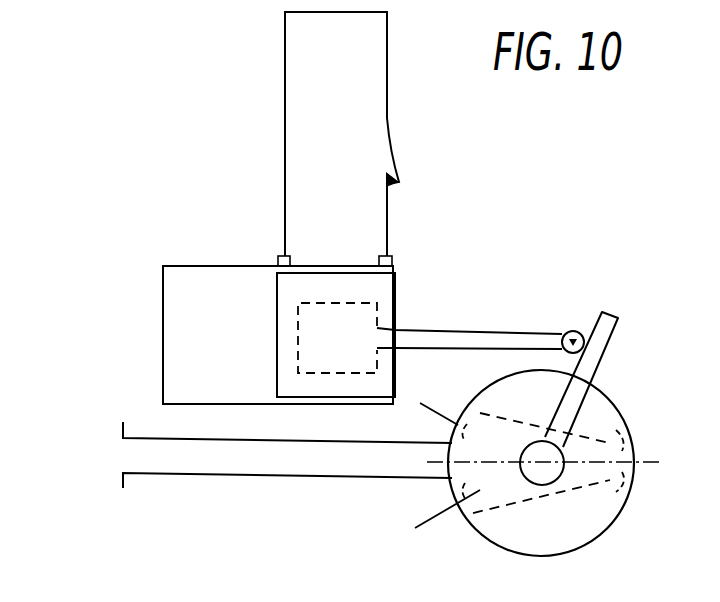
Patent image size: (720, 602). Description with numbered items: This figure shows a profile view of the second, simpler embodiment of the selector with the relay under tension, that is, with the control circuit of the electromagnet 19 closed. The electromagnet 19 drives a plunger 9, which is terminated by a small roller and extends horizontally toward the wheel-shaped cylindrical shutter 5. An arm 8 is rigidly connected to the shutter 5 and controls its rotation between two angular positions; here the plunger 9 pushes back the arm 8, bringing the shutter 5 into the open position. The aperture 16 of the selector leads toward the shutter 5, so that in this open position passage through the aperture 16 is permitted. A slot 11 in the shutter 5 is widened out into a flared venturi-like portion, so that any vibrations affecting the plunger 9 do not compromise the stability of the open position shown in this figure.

The shutter 5 is at (614, 523).
The arm 8 is at (606, 352).
The plunger 9 is at (470, 330).
The slot 11 is at (478, 508).
The aperture 16 is at (123, 460).
The electromagnet 19 is at (188, 265).